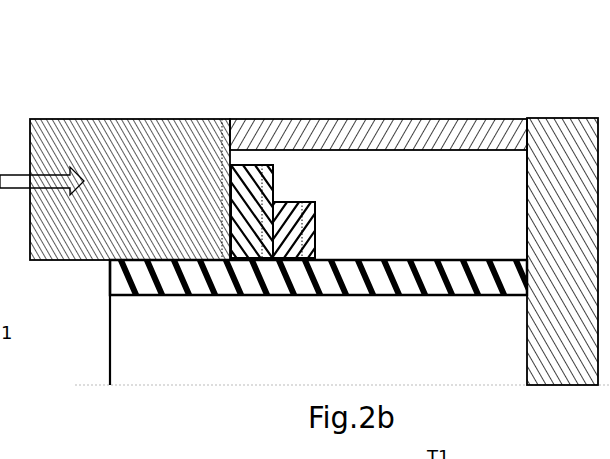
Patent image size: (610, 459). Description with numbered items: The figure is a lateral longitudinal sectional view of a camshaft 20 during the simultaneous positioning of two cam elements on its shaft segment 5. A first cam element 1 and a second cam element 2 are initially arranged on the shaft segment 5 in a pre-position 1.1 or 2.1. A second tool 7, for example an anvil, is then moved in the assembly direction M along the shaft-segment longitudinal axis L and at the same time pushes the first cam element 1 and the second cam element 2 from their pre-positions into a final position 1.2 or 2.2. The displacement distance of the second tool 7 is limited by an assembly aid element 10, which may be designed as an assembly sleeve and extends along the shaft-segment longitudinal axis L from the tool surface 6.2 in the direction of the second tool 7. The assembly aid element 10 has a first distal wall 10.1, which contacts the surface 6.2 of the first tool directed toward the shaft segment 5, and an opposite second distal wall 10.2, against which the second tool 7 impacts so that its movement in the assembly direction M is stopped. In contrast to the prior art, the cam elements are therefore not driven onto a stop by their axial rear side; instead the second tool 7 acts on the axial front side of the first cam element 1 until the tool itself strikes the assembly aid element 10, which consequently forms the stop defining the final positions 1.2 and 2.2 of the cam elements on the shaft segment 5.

The second tool 7 is at (146, 119).
The second distal wall 10.2 is at (212, 119).
The assembly aid element 10 is at (410, 119).
The first distal wall 10.1 is at (553, 118).
The surface of the first tool 6.2 is at (522, 207).
The camshaft 20 is at (469, 72).
The first cam element 1 is at (247, 119).
The pre-position of the first cam element 1.1 is at (273, 171).
The final position of the first cam element 1.2 is at (279, 189).
The second cam element 2 is at (307, 249).
The final position of the second cam element 2.2 is at (321, 210).
The pre-position of the second cam element 2.1 is at (325, 227).
The shaft segment 5 is at (125, 282).
The shaft-segment longitudinal axis L is at (90, 385).
The assembly direction M is at (3, 173).